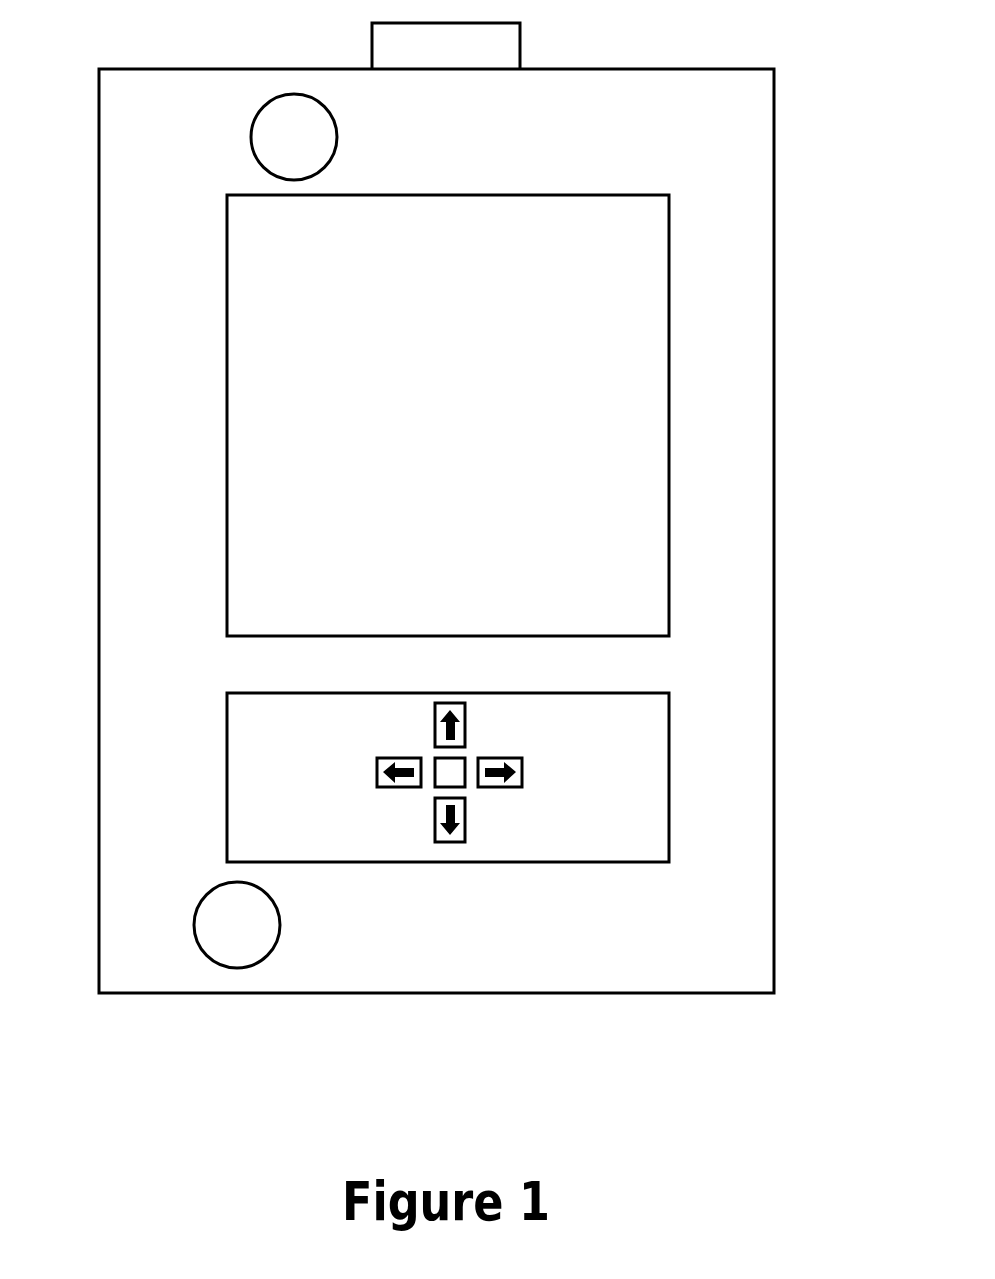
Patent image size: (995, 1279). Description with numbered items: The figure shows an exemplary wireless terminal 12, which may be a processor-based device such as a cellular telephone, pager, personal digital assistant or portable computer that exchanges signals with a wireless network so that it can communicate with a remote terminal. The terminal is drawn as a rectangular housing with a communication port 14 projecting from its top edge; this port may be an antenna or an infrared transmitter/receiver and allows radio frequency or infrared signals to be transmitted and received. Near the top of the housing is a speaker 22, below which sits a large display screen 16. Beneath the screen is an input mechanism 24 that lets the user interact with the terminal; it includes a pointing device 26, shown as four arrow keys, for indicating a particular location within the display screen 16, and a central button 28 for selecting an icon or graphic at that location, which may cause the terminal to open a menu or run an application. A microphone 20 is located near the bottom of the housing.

The wireless terminal 12 is at (774, 210).
The communication port 14 is at (520, 34).
The display screen 16 is at (466, 195).
The microphone 20 is at (250, 938).
The speaker 22 is at (293, 149).
The input mechanism 24 is at (669, 717).
The pointing device 26 is at (463, 705).
The button 28 is at (450, 772).